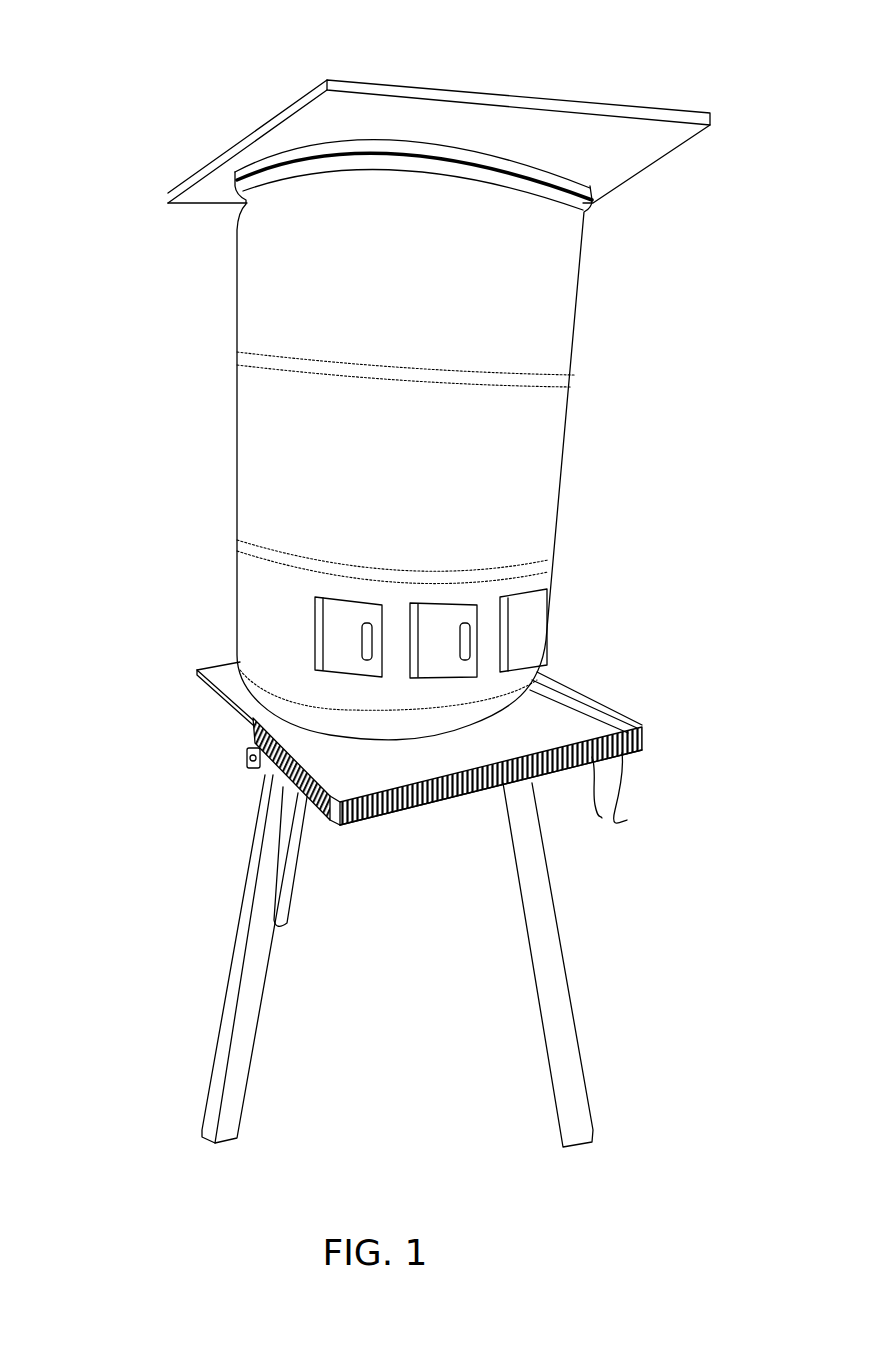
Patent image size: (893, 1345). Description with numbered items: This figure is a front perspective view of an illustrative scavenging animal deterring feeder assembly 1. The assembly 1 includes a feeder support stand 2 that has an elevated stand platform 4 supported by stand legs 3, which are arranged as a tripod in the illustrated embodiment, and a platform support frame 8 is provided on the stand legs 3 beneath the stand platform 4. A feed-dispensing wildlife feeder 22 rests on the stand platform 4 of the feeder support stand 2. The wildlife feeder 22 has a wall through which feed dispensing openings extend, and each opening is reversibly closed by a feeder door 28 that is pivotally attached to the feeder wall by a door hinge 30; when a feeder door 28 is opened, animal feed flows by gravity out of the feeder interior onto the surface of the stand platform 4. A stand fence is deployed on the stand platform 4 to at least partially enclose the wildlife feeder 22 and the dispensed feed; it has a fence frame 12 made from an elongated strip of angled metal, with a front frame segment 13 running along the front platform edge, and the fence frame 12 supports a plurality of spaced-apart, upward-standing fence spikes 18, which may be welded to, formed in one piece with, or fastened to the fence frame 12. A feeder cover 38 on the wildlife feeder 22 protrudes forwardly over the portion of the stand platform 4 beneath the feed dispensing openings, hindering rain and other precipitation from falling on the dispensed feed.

The assembly 1 is at (127, 140).
The feeder support stand 2 is at (187, 767).
The stand leg 3 is at (243, 1045).
The stand platform 4 is at (210, 660).
The platform support frame 8 is at (247, 760).
The fence frame 12 is at (387, 823).
The front frame segment 13 is at (458, 803).
The fence spike 18 is at (602, 818).
The feed-dispensing wildlife feeder 22 is at (233, 327).
The feeder door 28 is at (533, 597).
The door hinge 30 is at (503, 597).
The feeder cover 38 is at (417, 97).